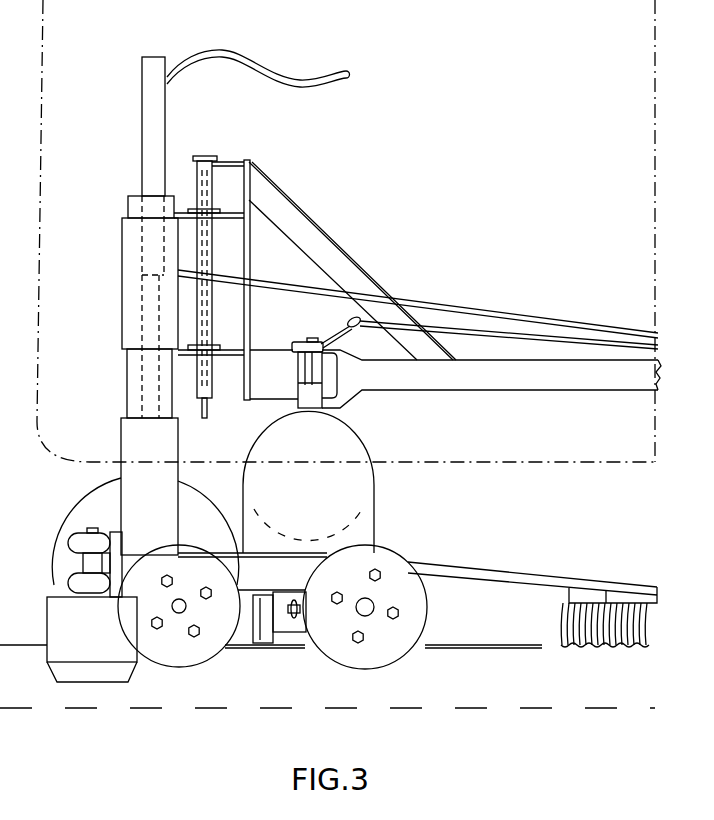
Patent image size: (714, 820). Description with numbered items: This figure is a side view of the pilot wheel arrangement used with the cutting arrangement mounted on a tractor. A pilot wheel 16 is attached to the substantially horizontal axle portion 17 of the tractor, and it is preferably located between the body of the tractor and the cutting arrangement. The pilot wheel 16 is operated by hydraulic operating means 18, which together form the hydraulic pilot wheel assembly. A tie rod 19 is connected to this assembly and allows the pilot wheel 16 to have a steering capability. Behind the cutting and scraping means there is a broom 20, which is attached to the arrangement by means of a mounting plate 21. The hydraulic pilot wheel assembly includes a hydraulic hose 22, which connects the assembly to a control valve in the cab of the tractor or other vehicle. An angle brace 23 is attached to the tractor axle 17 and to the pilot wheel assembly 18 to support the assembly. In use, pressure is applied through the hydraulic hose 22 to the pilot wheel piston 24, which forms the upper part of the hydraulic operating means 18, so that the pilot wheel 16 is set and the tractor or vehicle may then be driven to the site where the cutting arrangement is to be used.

The pilot wheel 16 is at (72, 533).
The horizontal axle portion 17 is at (486, 380).
The hydraulic operating means 18 is at (120, 252).
The tie rod 19 is at (573, 340).
The broom 20 is at (591, 645).
The mounting plate 21 is at (519, 573).
The hydraulic hose 22 is at (240, 52).
The angle brace 23 is at (297, 230).
The pilot wheel piston 24 is at (146, 86).